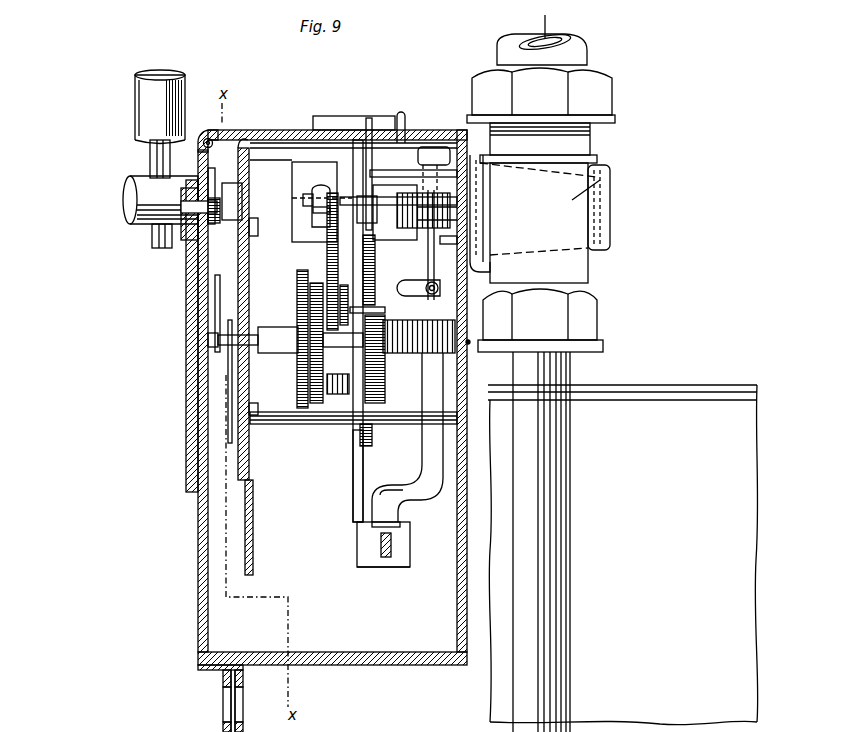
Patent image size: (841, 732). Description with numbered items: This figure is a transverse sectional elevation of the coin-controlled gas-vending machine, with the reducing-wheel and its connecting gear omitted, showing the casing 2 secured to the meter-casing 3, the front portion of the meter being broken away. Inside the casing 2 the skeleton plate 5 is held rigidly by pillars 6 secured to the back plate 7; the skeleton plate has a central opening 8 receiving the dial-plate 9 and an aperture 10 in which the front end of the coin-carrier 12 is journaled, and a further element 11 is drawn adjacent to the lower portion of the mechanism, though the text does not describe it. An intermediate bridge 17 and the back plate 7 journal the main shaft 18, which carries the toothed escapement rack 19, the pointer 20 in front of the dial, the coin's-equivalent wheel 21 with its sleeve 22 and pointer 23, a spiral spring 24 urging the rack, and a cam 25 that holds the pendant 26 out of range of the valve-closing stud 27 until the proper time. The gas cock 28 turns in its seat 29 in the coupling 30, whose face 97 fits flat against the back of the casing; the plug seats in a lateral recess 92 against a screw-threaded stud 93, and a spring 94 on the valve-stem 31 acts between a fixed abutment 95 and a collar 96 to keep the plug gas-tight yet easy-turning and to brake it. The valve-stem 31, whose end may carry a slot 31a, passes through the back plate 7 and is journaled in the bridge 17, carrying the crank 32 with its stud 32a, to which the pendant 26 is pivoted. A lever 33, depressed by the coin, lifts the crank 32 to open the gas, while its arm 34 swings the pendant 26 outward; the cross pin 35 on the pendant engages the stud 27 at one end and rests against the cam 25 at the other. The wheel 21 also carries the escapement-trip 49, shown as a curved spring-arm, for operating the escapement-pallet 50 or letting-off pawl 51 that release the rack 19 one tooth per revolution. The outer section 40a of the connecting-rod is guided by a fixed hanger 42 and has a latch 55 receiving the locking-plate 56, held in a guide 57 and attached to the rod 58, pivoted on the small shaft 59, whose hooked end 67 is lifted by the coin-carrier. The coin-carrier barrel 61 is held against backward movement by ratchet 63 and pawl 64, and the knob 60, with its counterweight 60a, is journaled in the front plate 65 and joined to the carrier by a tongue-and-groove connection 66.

The casing 2 is at (332, 676).
The meter-casing 3 is at (623, 555).
The skeleton plate 5 is at (253, 522).
The pillars 6 is at (353, 430).
The back plate 7 is at (457, 591).
The central opening 8 is at (257, 232).
The dial-plate 9 is at (238, 257).
The aperture 10 is at (248, 132).
The rod 11 is at (353, 499).
The coin-carrier 12 is at (268, 185).
The intermediate bridge or plate 17 is at (353, 151).
The main shaft 18 is at (208, 343).
The toothed escapement rack or wheel 19 is at (372, 292).
The hand or pointer 20 is at (215, 291).
The coin's-equivalent wheel 21 is at (300, 293).
The sleeve or arbor 22 is at (308, 322).
The hand or pointer 23 is at (228, 392).
The spring 24 is at (447, 360).
The cam 25 is at (385, 310).
The pivoted link or pendant 26 is at (327, 262).
The valve-closing stud 27 is at (340, 290).
The gas cock or valve 28 is at (598, 186).
The seat 29 is at (540, 447).
The coupling or union 30 is at (542, 85).
The valve-stem 31 is at (492, 191).
The slot 31a is at (327, 208).
The arm or crank 32 is at (370, 125).
The stud 32a is at (403, 114).
The lever 33 is at (378, 270).
The arm 34 is at (374, 366).
The cross piece or pin 35 is at (388, 325).
The outer section of connecting-rod 40a is at (392, 546).
The fixed hanger 42 is at (380, 566).
The escapement-trip 49 is at (338, 375).
The escapement-pallet 50 is at (373, 436).
The letting-off pawl 51 is at (271, 164).
The notch or latch 55 is at (357, 547).
The locking-plate 56 is at (437, 392).
The guide 57 is at (405, 525).
The rod 58 is at (428, 254).
The small shaft 59 is at (440, 288).
The knob or handle 60 is at (123, 155).
The counterweight 60a is at (180, 92).
The rotating block, cylinder, or barrel 61 is at (303, 200).
The ratchet 63 is at (455, 242).
The pawl 64 is at (482, 272).
The front plate or door 65 is at (198, 571).
The tongue-and-groove connection 66 is at (231, 183).
The upper hooked end 67 is at (437, 146).
The lateral recess 92 is at (607, 248).
The stud 93 is at (607, 220).
The spring 94 is at (440, 220).
The fixed bearing or abutment 95 is at (395, 212).
The pin or collar 96 is at (450, 207).
The face 97 is at (470, 266).